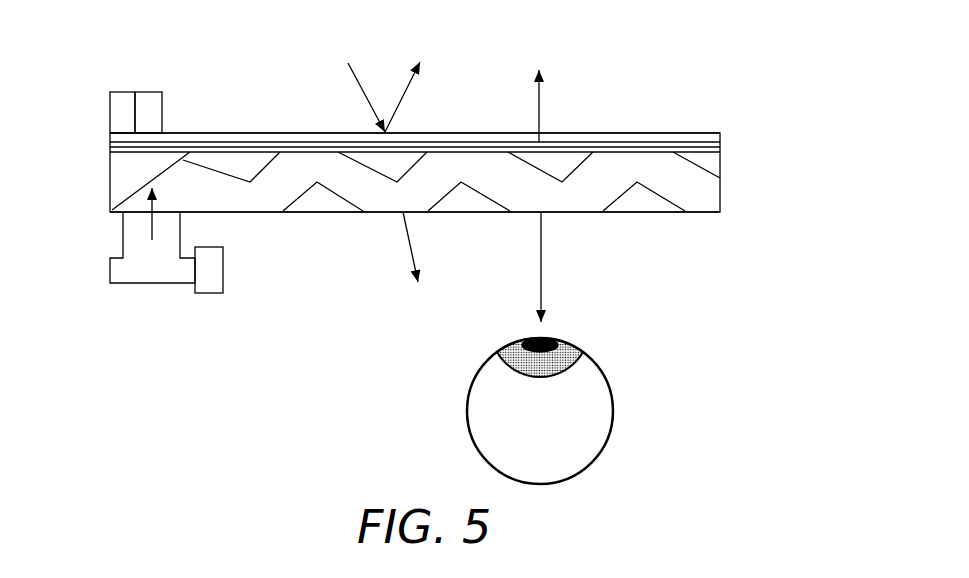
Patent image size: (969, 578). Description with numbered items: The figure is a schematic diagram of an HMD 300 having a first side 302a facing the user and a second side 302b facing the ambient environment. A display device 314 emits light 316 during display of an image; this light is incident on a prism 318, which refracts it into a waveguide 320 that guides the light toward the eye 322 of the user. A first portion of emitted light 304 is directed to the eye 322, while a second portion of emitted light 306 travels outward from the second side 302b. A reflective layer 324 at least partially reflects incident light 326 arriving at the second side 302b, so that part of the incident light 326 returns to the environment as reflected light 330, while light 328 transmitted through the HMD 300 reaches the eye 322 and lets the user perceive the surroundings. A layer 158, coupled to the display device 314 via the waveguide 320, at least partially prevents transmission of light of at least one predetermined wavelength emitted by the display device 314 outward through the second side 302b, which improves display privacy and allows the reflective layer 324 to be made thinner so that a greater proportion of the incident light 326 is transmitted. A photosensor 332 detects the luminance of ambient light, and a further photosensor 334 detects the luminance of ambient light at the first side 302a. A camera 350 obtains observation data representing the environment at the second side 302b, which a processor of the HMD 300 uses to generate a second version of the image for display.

The HMD 300 is at (411, 167).
The first side 302a is at (312, 225).
The second side 302b is at (277, 113).
The first portion of emitted light 304 is at (541, 260).
The second portion of emitted light 306 is at (539, 113).
The display device 314 is at (153, 283).
The light 316 is at (155, 197).
The prism 318 is at (110, 167).
The waveguide 320 is at (332, 181).
The eye 322 is at (603, 373).
The reflective layer 324 is at (648, 133).
The incident light 326 is at (348, 63).
The transmitted light 328 is at (412, 247).
The reflected light 330 is at (404, 88).
The photosensor 332 is at (110, 118).
The further photosensor 334 is at (213, 294).
The camera 350 is at (162, 125).
The layer 158 is at (720, 146).